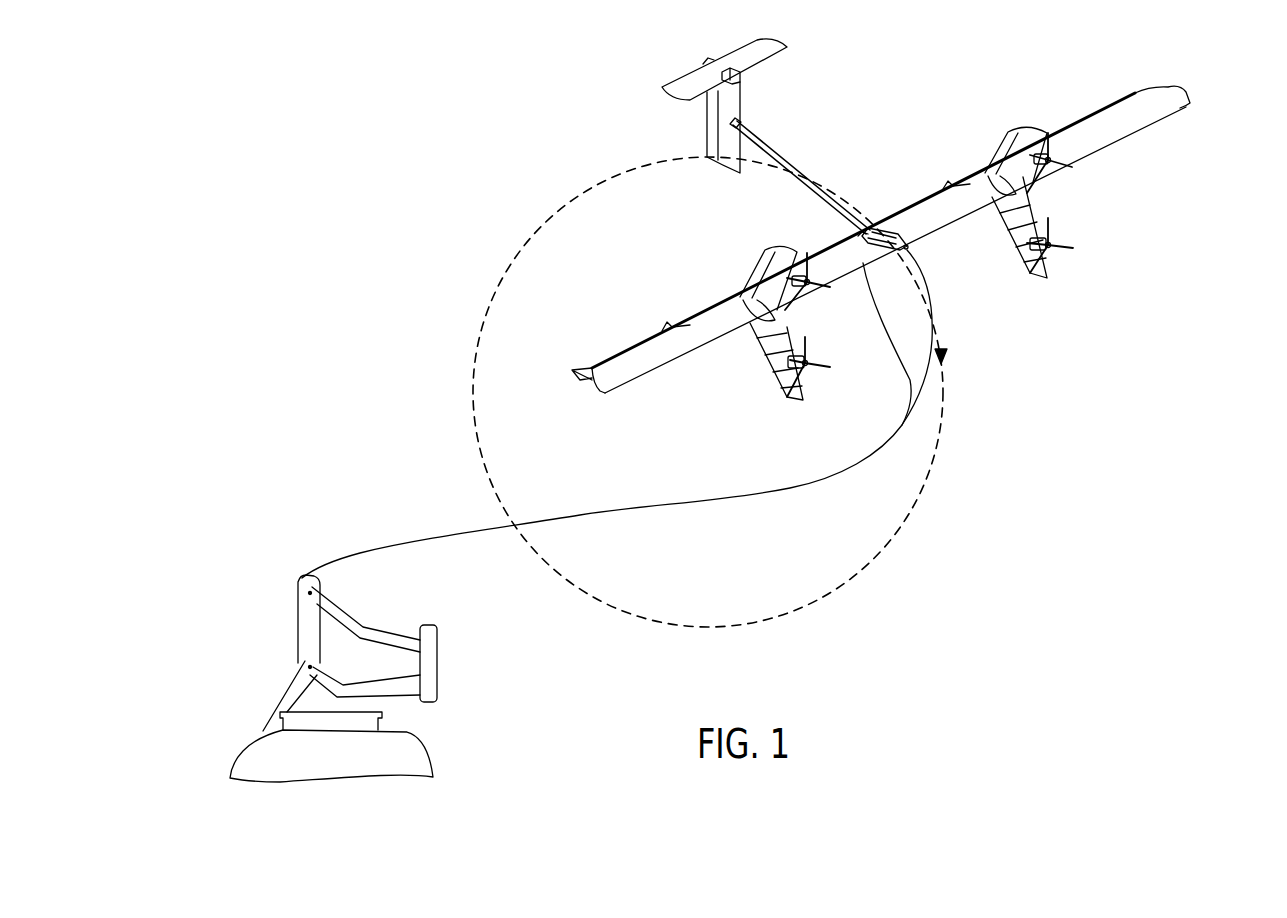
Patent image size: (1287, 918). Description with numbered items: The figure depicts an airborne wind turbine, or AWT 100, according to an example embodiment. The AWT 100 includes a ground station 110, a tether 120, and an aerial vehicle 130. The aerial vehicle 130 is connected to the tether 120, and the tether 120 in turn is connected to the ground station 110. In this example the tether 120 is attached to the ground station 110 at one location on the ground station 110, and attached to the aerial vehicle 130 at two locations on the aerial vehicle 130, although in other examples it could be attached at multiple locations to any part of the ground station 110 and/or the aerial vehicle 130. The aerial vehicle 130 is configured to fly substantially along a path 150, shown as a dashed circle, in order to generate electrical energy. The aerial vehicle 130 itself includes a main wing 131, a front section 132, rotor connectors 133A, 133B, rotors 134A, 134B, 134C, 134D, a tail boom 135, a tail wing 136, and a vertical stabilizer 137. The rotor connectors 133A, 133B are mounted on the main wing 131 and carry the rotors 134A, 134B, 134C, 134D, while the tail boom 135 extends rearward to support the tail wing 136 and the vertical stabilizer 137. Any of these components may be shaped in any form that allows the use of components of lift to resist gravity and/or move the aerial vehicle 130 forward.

The AWT 100 is at (305, 213).
The ground station 110 is at (307, 630).
The tether 120 is at (415, 538).
The aerial vehicle 130 is at (1270, 68).
The main wing 131 is at (945, 215).
The front section 132 is at (907, 251).
The rotor connector 133A is at (1003, 138).
The rotor connector 133B is at (762, 265).
The rotor 134A is at (1057, 167).
The rotor 134B is at (1053, 253).
The rotor 134C is at (810, 288).
The rotor 134D is at (810, 373).
The tail boom 135 is at (797, 164).
The tail wing 136 is at (781, 43).
The vertical stabilizer 137 is at (730, 167).
The path 150 is at (531, 236).